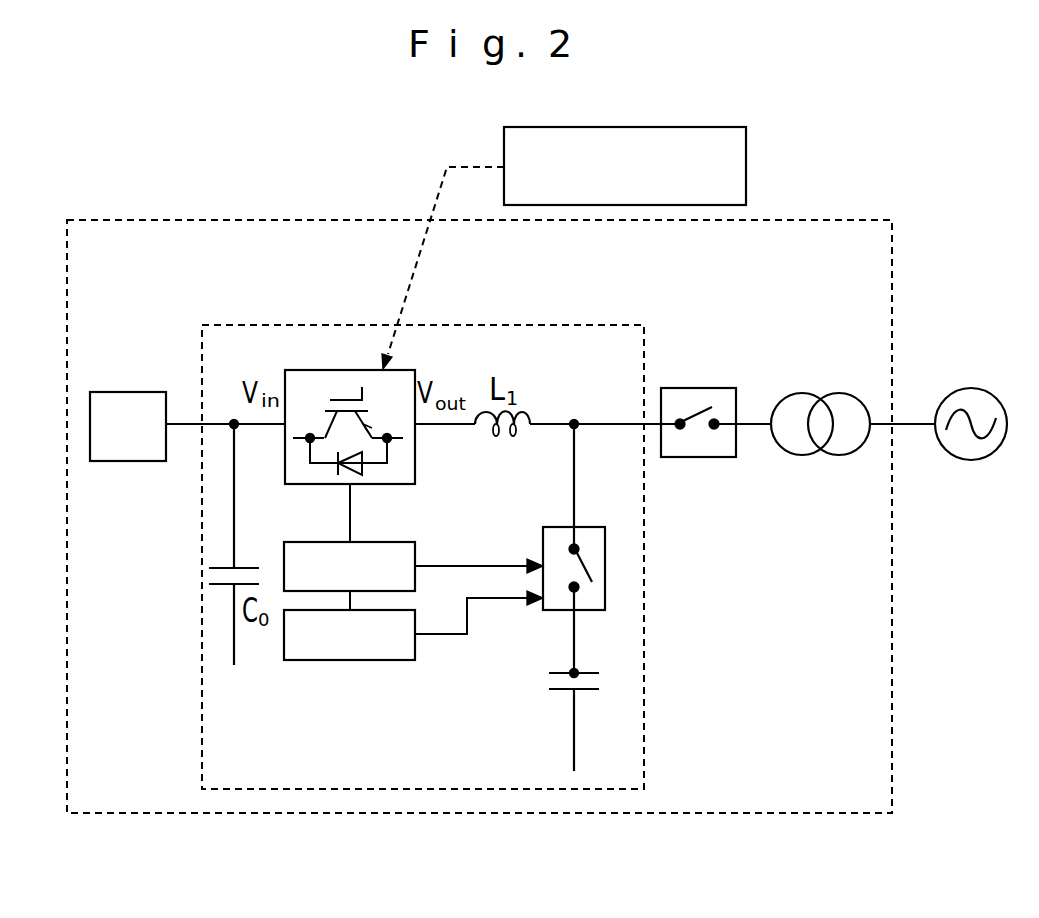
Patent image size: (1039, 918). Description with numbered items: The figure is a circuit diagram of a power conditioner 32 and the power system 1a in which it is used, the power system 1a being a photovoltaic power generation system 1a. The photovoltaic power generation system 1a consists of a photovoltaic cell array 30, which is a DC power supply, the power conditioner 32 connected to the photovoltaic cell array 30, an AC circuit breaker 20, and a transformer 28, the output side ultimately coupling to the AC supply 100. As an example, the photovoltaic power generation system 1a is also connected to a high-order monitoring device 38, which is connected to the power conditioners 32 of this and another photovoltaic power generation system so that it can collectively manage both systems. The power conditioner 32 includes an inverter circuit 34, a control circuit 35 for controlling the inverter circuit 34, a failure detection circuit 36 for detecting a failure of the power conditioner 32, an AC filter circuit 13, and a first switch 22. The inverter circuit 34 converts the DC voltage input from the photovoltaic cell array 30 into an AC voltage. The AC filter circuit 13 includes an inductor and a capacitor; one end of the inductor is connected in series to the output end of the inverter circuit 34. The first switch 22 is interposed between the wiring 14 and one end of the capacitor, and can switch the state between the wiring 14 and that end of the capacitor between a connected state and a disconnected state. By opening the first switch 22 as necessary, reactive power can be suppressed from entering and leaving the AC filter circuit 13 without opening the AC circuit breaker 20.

The photovoltaic power generation system 1a is at (131, 220).
The photovoltaic cell array 30 is at (126, 392).
The power conditioner 32 is at (227, 325).
The inverter circuit 34 is at (304, 370).
The control circuit 35 is at (390, 542).
The failure detection circuit 36 is at (346, 662).
The high-order monitoring device 38 is at (746, 163).
The wiring 14 is at (555, 422).
The first switch 22 is at (606, 577).
The AC filter circuit 13 is at (538, 621).
The AC circuit breaker 20 is at (697, 388).
The transformer 28 is at (801, 393).
The power grid 100 is at (968, 388).